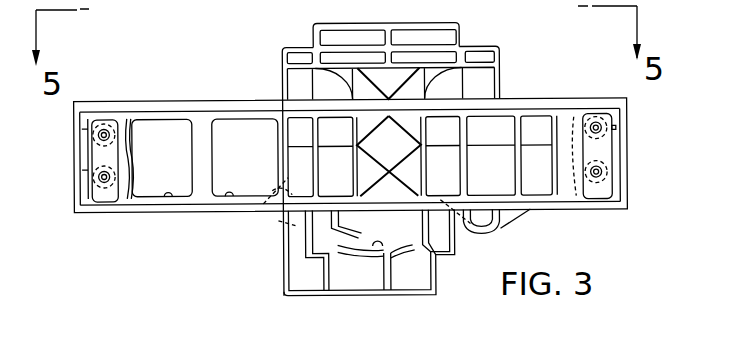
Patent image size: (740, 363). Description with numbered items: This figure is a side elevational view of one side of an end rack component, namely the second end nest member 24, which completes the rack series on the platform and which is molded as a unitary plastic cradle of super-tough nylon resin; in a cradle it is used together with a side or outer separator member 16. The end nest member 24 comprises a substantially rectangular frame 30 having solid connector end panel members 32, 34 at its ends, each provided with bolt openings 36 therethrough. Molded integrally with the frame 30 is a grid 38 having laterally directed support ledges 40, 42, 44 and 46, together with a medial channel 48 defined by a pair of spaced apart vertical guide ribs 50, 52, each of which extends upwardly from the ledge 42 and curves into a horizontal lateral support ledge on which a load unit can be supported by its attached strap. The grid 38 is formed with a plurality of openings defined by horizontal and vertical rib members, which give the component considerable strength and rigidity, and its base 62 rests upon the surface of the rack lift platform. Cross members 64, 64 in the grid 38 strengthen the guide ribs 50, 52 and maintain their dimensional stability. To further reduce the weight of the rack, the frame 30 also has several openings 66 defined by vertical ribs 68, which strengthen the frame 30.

The side or outer separator member 16 is at (229, 197).
The second end nest member 24 is at (511, 96).
The frame 30 is at (567, 108).
The connector end panel member 32 is at (100, 153).
The connector end panel member 34 is at (603, 151).
The bolt openings 36 is at (104, 127).
The grid 38 is at (280, 131).
The support ledge 40 is at (265, 213).
The support ledge 42 is at (371, 243).
The support ledge 44 is at (468, 183).
The support ledge 46 is at (506, 223).
The medial channel 48 is at (358, 84).
The vertical guide rib 50 is at (354, 189).
The vertical guide rib 52 is at (424, 189).
The base 62 is at (312, 297).
The cross members 64 is at (383, 162).
The openings 66 is at (167, 197).
The vertical ribs 68 is at (200, 158).